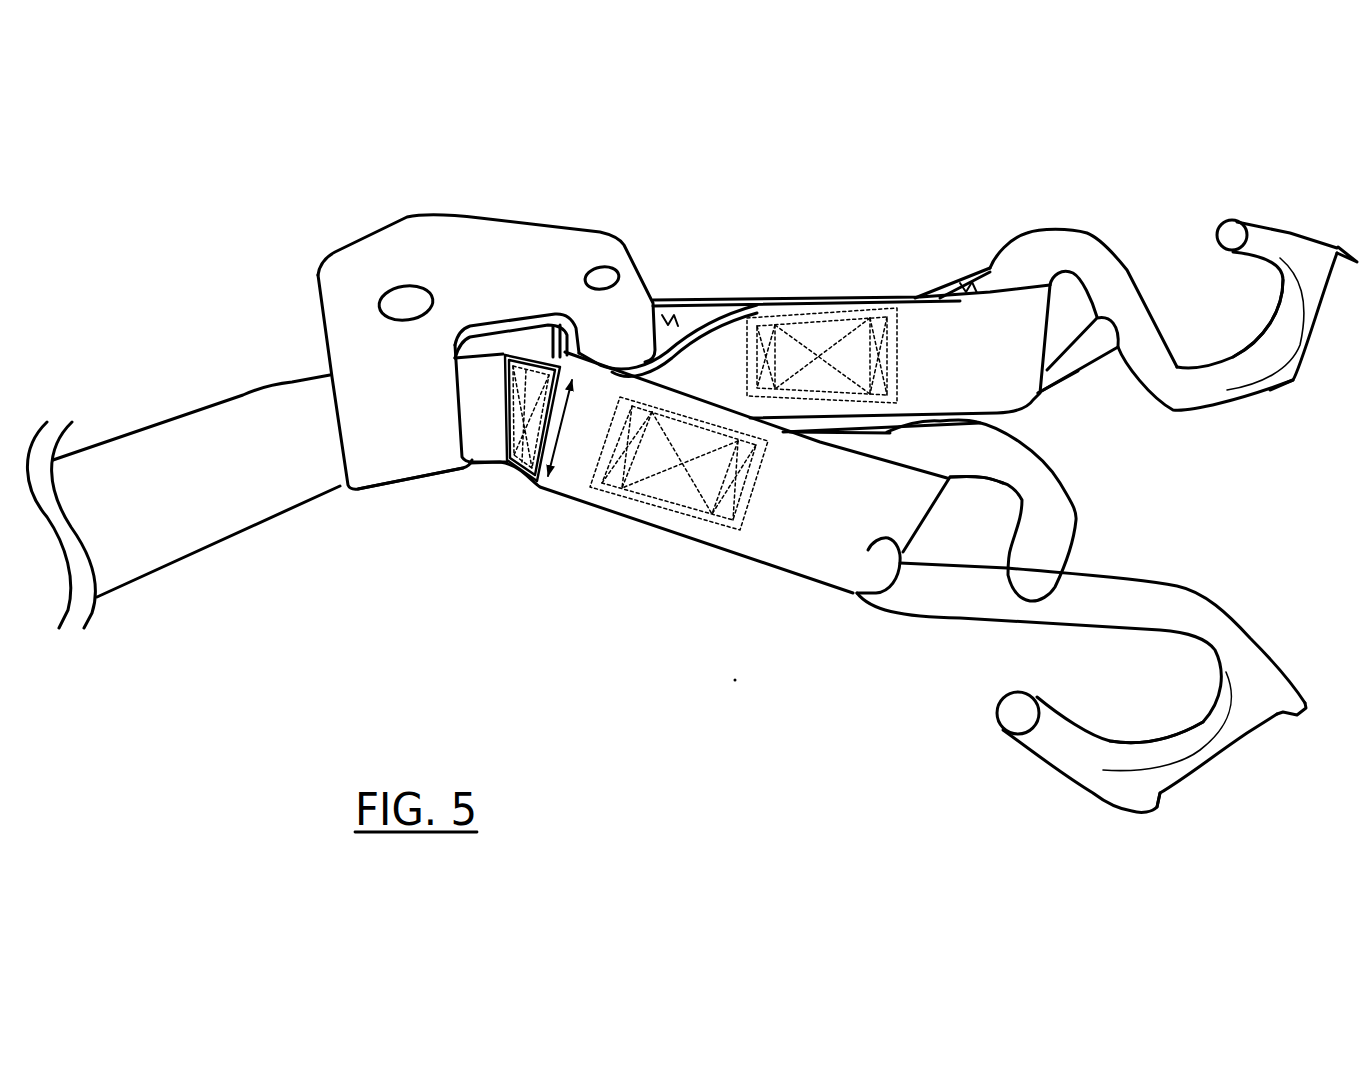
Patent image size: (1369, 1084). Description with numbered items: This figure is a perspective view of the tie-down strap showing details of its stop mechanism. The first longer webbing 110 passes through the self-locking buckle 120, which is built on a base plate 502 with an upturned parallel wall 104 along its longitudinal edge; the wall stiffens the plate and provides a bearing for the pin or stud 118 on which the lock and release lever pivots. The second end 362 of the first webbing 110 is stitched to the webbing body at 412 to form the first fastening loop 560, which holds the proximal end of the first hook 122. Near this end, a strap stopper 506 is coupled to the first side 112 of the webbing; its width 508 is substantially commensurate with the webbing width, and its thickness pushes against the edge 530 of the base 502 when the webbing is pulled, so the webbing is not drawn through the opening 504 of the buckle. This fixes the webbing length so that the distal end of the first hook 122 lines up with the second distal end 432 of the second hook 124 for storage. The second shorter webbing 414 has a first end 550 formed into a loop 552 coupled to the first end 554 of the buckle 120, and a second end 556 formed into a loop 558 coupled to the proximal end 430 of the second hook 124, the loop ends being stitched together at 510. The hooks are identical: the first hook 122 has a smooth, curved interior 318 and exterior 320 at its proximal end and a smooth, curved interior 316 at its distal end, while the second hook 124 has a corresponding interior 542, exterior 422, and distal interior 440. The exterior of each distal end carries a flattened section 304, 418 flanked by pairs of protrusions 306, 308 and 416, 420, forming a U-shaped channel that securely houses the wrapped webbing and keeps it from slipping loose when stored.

The upturned parallel wall 104 is at (407, 251).
The first longer webbing 110 is at (247, 534).
The first side of the first webbing 112 is at (198, 506).
The pin or stud 118 is at (393, 303).
The self-locking buckle 120 is at (514, 193).
The first hook 122 is at (1062, 636).
The second hook 124 is at (1165, 232).
The flattened section 304 is at (1207, 760).
The protrusion 306 is at (1298, 725).
The protrusion 308 is at (1163, 810).
The interior of the distal end 316 is at (1183, 733).
The interior of the proximal end 318 is at (1000, 489).
The exterior of the proximal end 320 is at (1080, 497).
The second end of the webbing 362 is at (878, 543).
The stitching 412 is at (653, 495).
The second shorter webbing 414 is at (923, 374).
The protrusion 416 is at (1290, 392).
The flattened section 418 is at (1305, 330).
The protrusion 420 is at (1337, 245).
The exterior of the proximal end 422 is at (1050, 232).
The proximal end of the second hook 430 is at (1087, 398).
The second distal end 432 is at (1258, 206).
The interior of the distal end 440 is at (1260, 333).
The base plate 502 is at (385, 432).
The opening of the self-locking buckle 504 is at (513, 340).
The strap stopper 506 is at (527, 447).
The width of the strap stopper 508 is at (558, 432).
The stitching 510 is at (800, 338).
The edge of the base 530 is at (455, 425).
The interior of the proximal end 542 is at (1077, 282).
The first end of the second shorter webbing 550 is at (707, 300).
The loop 552 is at (677, 318).
The first end of the self-locking buckle 554 is at (641, 355).
The second end of the second shorter webbing 556 is at (910, 297).
The loop 558 is at (970, 280).
The first fastening loop 560 is at (855, 438).